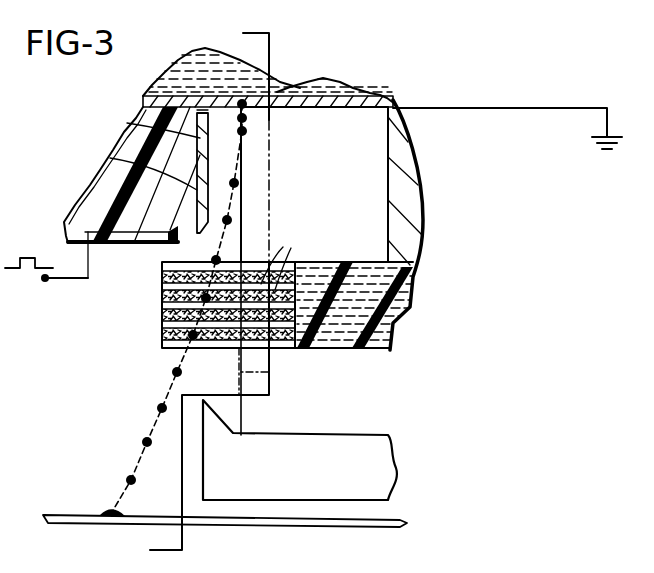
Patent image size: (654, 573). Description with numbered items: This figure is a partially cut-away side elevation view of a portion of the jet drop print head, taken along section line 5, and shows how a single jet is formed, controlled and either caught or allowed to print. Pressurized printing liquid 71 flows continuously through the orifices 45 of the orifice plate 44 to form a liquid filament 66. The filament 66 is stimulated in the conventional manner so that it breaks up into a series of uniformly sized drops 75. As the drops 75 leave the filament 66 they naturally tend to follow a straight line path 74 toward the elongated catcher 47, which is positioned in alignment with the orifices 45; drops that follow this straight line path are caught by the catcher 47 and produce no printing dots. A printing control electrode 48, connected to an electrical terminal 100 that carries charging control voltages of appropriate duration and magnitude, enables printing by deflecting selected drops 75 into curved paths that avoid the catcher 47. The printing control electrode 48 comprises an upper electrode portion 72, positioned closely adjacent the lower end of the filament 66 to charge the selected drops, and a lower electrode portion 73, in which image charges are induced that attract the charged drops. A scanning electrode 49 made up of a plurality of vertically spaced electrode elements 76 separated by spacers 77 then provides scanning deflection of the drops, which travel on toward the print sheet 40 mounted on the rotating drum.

The section line 5- 5 is at (183, 292).
The print sheet 40 is at (85, 518).
The orifice plate 44 is at (388, 96).
The orifices 45 is at (326, 79).
The catcher 47 is at (297, 434).
The printing control electrodes 48 is at (230, 159).
The scanning electrodes 49 is at (128, 332).
The liquid filaments 66 is at (332, 267).
The printing liquid 71 is at (287, 82).
The upper electrode portion 72 is at (127, 123).
The lower electrode portion 73 is at (110, 158).
The straight line path 74 is at (268, 372).
The drops 75 is at (130, 478).
The electrode elements 76 is at (160, 337).
The spacers 77 is at (288, 256).
The electrical terminal 100 is at (68, 302).